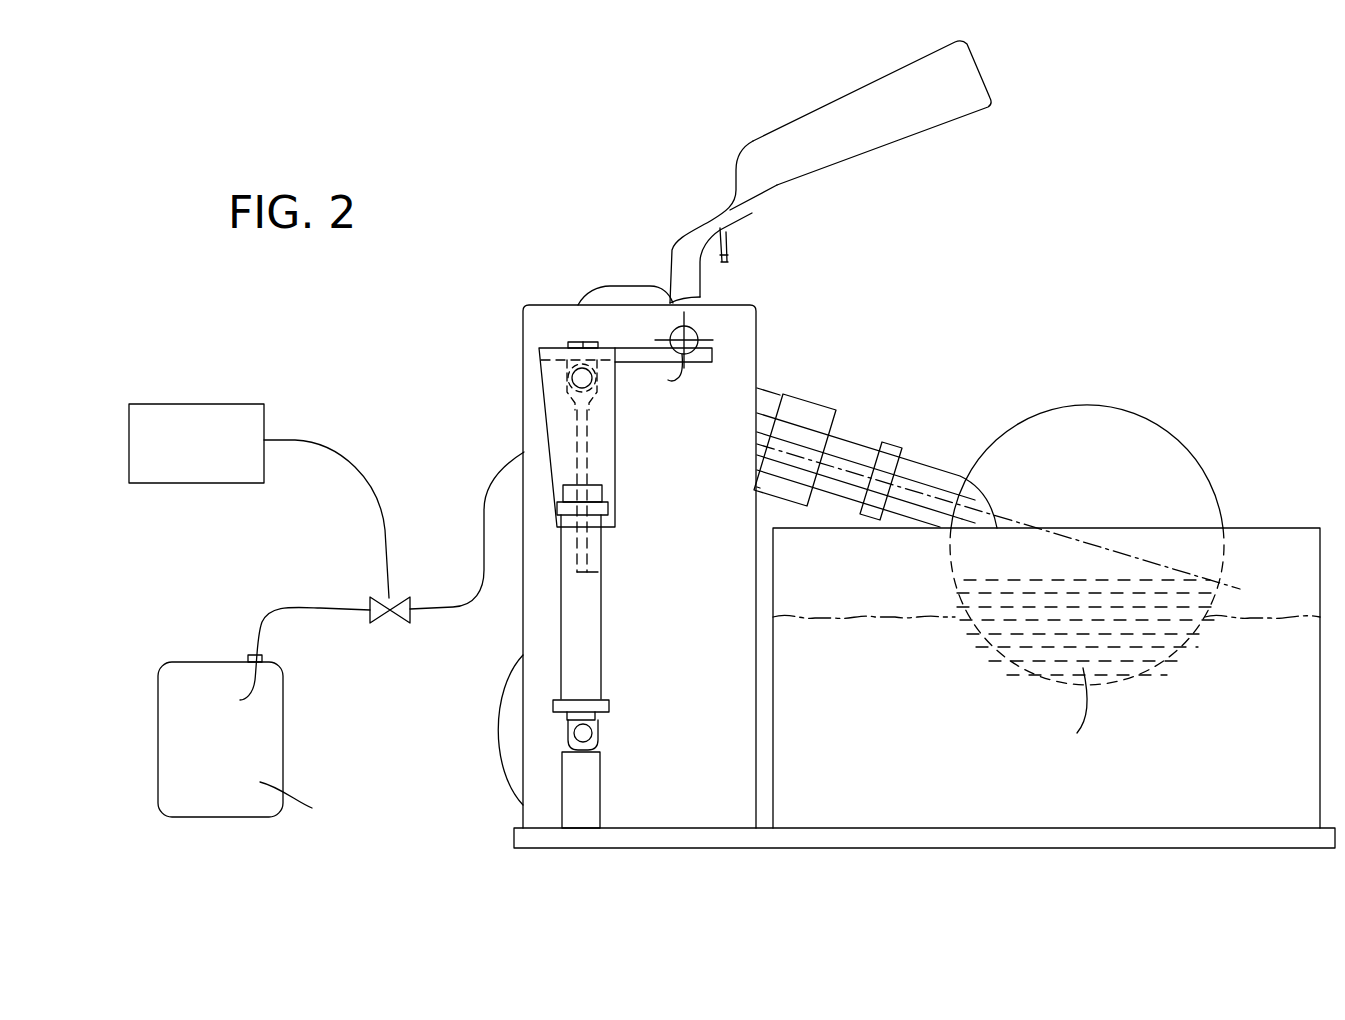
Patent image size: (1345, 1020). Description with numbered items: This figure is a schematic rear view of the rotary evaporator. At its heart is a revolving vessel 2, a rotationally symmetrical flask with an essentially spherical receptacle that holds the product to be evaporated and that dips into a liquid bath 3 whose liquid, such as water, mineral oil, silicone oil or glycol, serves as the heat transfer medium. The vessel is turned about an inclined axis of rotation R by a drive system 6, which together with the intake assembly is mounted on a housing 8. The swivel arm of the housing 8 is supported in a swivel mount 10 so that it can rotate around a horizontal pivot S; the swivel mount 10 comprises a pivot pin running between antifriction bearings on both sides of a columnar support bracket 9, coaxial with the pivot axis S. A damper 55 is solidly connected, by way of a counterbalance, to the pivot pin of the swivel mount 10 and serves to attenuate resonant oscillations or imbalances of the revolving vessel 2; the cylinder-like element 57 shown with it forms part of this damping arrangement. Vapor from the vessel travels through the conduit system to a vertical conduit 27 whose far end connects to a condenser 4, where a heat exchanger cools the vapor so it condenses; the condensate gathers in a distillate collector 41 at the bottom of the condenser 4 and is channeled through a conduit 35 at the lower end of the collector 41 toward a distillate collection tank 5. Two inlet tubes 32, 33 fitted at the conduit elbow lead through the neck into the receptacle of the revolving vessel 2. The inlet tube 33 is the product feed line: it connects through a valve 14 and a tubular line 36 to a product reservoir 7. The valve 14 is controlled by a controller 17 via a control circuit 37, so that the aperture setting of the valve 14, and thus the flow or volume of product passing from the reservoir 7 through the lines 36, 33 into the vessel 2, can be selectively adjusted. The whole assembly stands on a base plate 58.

The revolving vessel 2 is at (1150, 437).
The liquid bath 3 is at (1270, 548).
The condenser 4 is at (967, 98).
The distillate collection tank 5 is at (507, 720).
The drive system 6 is at (797, 408).
The product reservoir 7 is at (283, 750).
The housing 8 is at (833, 413).
The support bracket 9 is at (537, 317).
The swivel mount 10 is at (694, 333).
The valve 14 is at (377, 600).
The controller 17 is at (209, 413).
The vertical conduit 27 is at (690, 240).
The inlet tube 32 is at (953, 545).
The inlet tube 33 is at (484, 510).
The conduit 35 is at (597, 284).
The tubular line 36 is at (270, 613).
The control circuit 37 is at (337, 450).
The distillate collector 41 is at (737, 228).
The damper 55 is at (573, 606).
The cylinder 57 is at (553, 408).
The base plate 58 is at (590, 840).
The axis of rotation R is at (1088, 542).
The pivot S is at (663, 375).